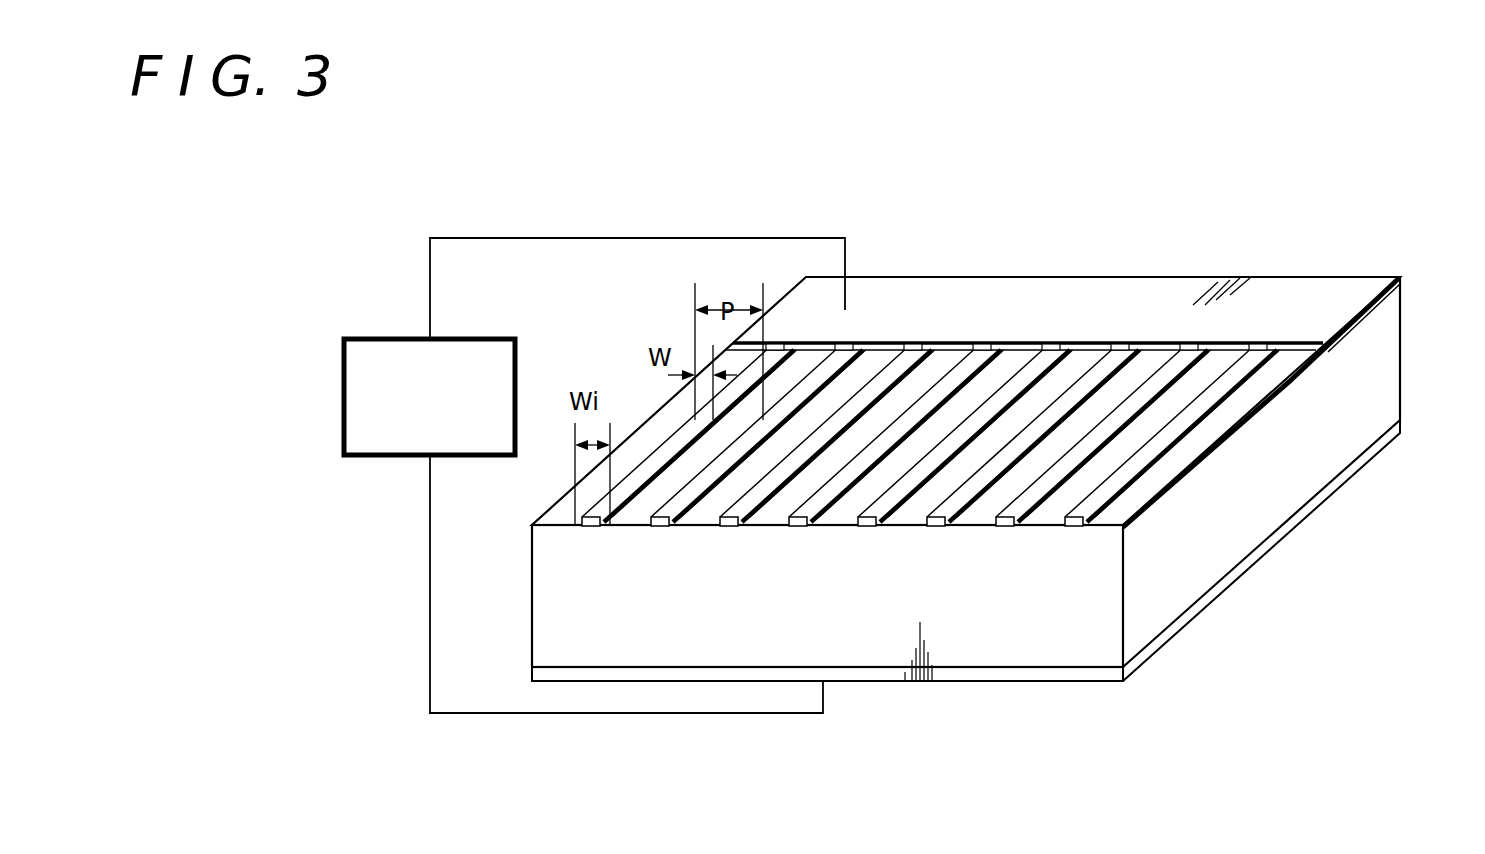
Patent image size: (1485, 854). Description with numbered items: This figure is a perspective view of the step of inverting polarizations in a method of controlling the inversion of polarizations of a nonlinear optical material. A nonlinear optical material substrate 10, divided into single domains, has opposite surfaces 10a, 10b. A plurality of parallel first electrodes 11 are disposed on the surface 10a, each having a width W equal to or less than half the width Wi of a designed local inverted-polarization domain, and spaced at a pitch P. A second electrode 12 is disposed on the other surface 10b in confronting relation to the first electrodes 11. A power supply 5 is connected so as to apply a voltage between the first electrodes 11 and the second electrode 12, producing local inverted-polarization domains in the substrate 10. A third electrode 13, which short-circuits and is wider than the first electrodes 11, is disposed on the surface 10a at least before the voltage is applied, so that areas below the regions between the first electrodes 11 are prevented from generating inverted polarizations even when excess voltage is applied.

The power supply 5 is at (381, 337).
The nonlinear optical material substrate 10 is at (1233, 533).
The surface 10a is at (1216, 438).
The other surface 10b is at (1322, 522).
The first electrodes 11 is at (1128, 407).
The second electrode 12 is at (988, 681).
The third electrode 13 is at (978, 290).